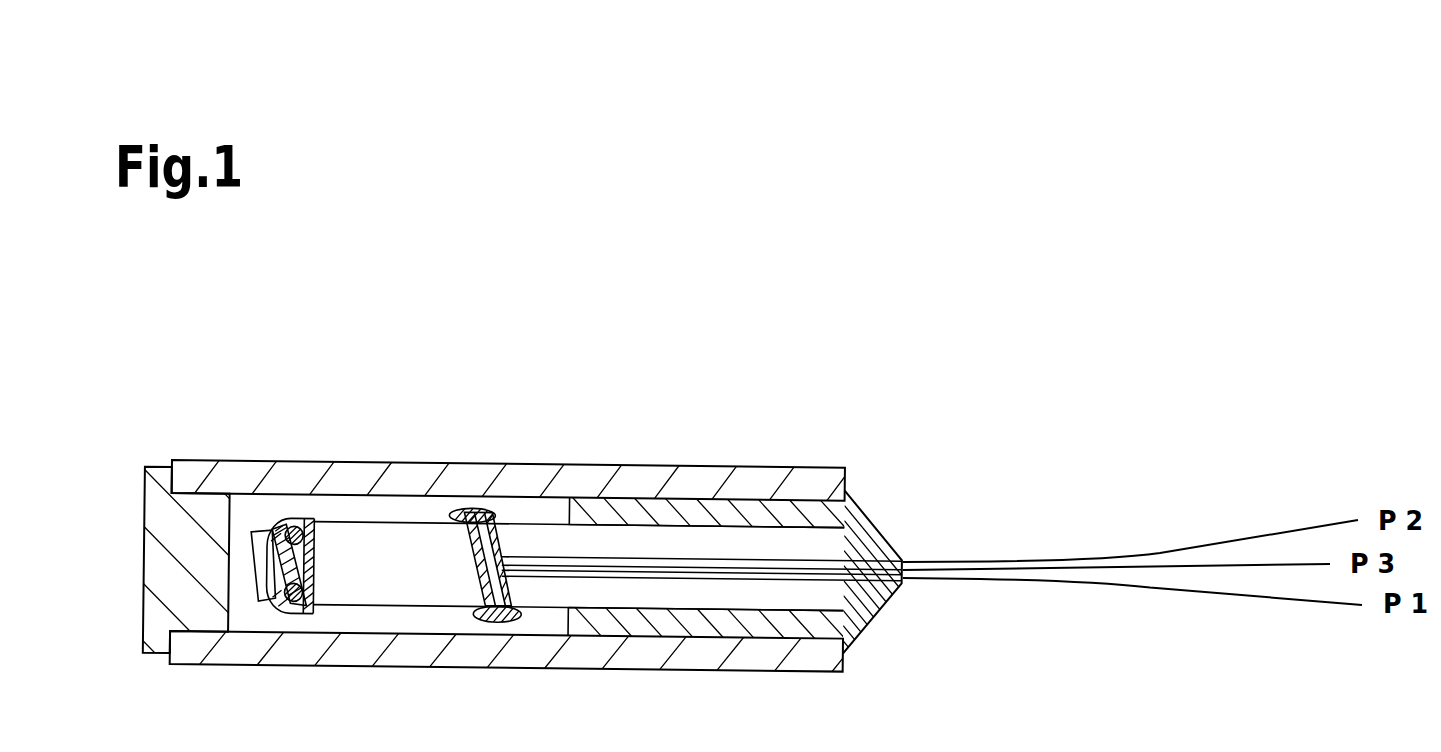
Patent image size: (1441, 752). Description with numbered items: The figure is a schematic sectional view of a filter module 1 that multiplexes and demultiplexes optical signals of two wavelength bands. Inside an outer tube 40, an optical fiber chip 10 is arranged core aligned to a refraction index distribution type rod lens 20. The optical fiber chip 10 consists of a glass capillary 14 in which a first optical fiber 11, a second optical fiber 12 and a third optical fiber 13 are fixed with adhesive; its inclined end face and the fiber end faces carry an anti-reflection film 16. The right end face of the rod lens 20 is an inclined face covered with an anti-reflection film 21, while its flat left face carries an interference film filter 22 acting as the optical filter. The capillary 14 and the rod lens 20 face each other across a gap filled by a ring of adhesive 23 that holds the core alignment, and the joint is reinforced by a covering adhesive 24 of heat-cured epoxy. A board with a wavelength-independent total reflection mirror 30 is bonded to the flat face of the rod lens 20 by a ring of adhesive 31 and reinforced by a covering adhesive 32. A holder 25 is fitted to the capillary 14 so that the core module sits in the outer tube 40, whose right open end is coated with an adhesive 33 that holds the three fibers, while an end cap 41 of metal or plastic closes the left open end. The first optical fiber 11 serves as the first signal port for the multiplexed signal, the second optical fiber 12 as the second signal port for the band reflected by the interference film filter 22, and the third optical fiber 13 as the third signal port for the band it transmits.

The filter module 1 is at (831, 355).
The optical fiber chip 10 is at (697, 483).
The first optical fiber 11 is at (1217, 590).
The second optical fiber 12 is at (1200, 547).
The third optical fiber 13 is at (1248, 567).
The capillary 14 is at (551, 535).
The anti-reflection film 16 is at (582, 413).
The refraction index distribution type rod lens 20 is at (393, 526).
The anti-reflection film 21 is at (465, 612).
The interference film filter 22 is at (318, 612).
The adhesive 23 is at (466, 509).
The adhesive 24 is at (510, 622).
The holder 25 is at (805, 507).
The wavelength-independent total reflection mirror 30 is at (253, 530).
The adhesive 31 is at (290, 617).
The adhesive 32 is at (313, 505).
The adhesive 33 is at (638, 503).
The outer tube 40 is at (190, 460).
The end cap 41 is at (148, 530).